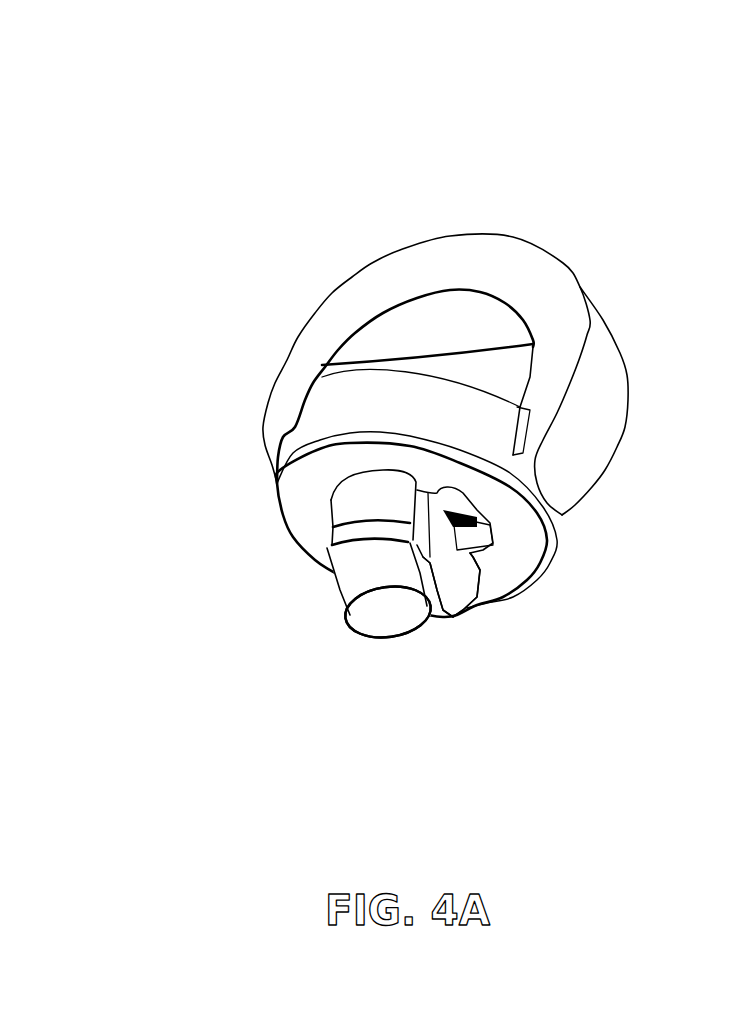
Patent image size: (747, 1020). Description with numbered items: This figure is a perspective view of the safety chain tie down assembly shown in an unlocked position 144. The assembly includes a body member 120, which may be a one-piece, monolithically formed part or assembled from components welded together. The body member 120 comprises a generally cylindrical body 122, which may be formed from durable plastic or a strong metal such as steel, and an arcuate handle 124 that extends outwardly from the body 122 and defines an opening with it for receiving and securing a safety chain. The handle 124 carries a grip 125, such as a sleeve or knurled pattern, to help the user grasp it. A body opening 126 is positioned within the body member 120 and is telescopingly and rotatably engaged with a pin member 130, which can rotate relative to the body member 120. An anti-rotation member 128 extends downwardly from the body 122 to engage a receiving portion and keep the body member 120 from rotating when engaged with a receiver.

The body member 120 is at (225, 123).
The body 122 is at (317, 417).
The handle 124 is at (353, 290).
The grip 125 is at (590, 415).
The body opening 126 is at (470, 527).
The anti-rotation member 128 is at (353, 498).
The pin member 130 is at (317, 663).
The unlocked position 144 is at (457, 677).